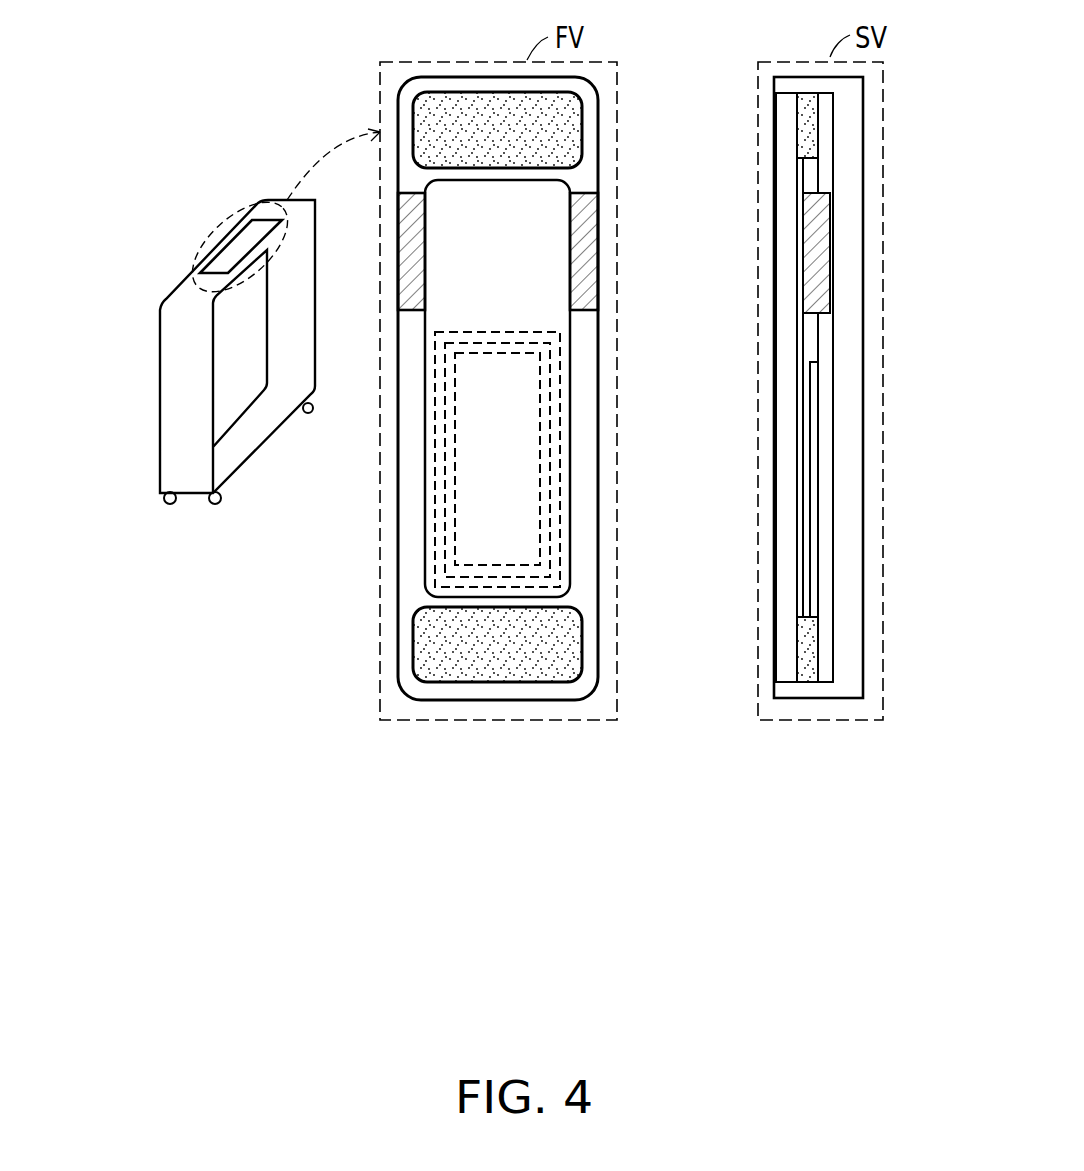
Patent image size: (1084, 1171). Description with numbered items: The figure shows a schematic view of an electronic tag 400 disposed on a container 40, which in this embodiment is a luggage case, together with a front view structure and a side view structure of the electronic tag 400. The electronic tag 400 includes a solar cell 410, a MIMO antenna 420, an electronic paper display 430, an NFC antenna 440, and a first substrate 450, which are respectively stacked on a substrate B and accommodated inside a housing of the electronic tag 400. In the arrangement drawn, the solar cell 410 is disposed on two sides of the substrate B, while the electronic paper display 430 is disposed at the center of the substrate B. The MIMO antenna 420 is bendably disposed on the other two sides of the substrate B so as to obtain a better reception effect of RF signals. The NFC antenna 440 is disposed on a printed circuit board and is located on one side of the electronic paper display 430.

The container 40 is at (178, 393).
The electronic tag 400 is at (222, 226).
The solar cell 410 is at (810, 137).
The MIMO antenna 420 is at (418, 237).
The electronic paper display 430 is at (800, 325).
The NFC antenna 440 is at (813, 445).
The first substrate 450 is at (785, 538).
The substrate B is at (825, 400).